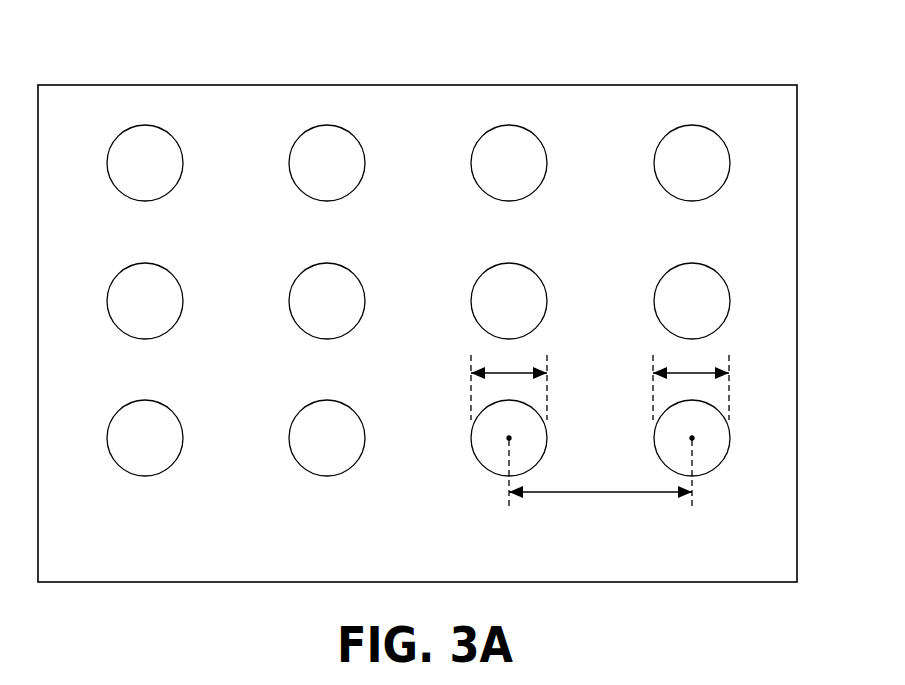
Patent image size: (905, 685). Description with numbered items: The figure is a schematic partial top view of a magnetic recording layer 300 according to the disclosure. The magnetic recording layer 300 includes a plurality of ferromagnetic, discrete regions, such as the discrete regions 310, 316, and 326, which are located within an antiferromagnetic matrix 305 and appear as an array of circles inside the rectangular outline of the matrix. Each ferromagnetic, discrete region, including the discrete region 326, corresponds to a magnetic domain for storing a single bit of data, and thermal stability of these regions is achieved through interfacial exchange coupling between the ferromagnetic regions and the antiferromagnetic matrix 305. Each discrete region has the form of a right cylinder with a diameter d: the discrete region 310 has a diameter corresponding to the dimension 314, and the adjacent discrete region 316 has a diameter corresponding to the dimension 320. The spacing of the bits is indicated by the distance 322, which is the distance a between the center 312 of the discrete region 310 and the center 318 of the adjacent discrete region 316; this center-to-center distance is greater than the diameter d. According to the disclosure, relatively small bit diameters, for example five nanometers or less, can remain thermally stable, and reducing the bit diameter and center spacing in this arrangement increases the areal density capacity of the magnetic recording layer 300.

The magnetic recording layer 300 is at (738, 55).
The antiferromagnetic matrix 305 is at (437, 113).
The ferromagnetic discrete region 326 is at (157, 143).
The ferromagnetic discrete region 310 is at (714, 440).
The center of ferromagnetic discrete region 312 is at (700, 451).
The diameter of discrete region 314 is at (692, 370).
The ferromagnetic discrete region 316 is at (488, 435).
The center of ferromagnetic discrete region 318 is at (500, 450).
The diameter of discrete region 320 is at (507, 370).
The distance between bit centers 322 is at (596, 493).